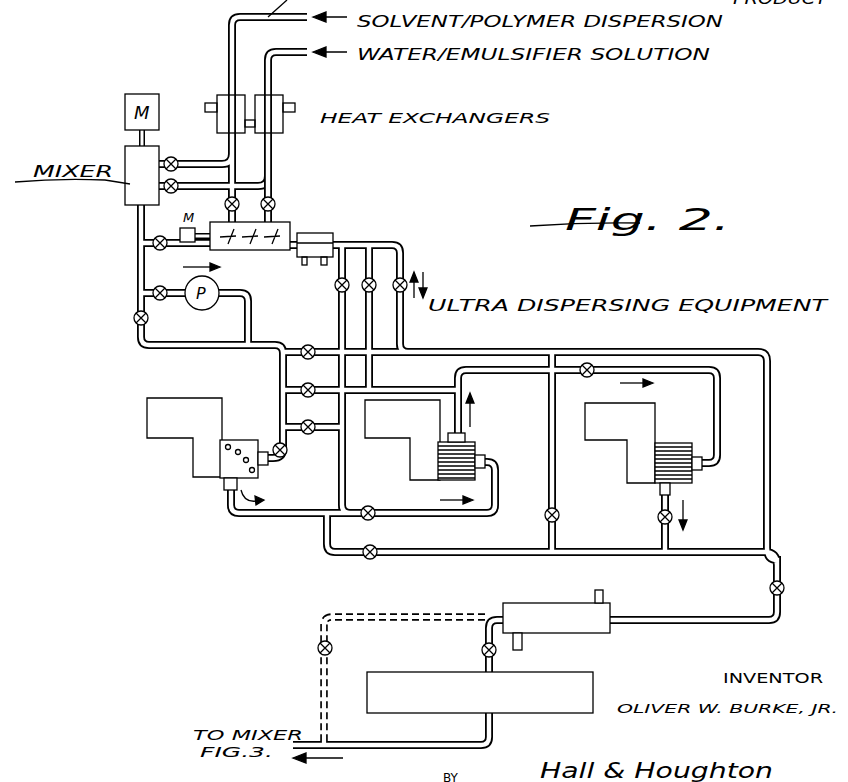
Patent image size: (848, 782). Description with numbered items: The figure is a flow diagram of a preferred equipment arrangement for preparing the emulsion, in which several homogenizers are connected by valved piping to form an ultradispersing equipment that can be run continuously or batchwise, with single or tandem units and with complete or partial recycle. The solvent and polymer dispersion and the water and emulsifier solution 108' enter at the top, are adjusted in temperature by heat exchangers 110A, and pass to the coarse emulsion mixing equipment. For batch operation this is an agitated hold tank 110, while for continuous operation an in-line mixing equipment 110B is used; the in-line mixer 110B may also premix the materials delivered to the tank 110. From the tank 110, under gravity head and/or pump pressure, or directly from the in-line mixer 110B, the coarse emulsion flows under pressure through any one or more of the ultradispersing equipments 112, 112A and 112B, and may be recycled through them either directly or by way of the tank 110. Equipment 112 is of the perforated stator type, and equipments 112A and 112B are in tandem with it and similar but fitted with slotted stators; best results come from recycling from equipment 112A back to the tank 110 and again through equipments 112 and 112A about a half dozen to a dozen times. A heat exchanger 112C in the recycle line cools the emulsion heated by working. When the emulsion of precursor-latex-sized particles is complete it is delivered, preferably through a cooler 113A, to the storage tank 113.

The water and emulsifier solution 108' is at (306, 137).
The heat exchangers 110A is at (205, 108).
The in-line mixing equipment 110B is at (127, 200).
The hold tank 110 is at (286, 222).
The heat exchanger in the recycle line 112C is at (323, 233).
The ultradispersing equipment 112 is at (202, 460).
The ultradispersing equipment 112A is at (420, 452).
The ultradispersing equipment 112B is at (637, 463).
The cooler 113A is at (610, 636).
The storage tank 113 is at (573, 692).